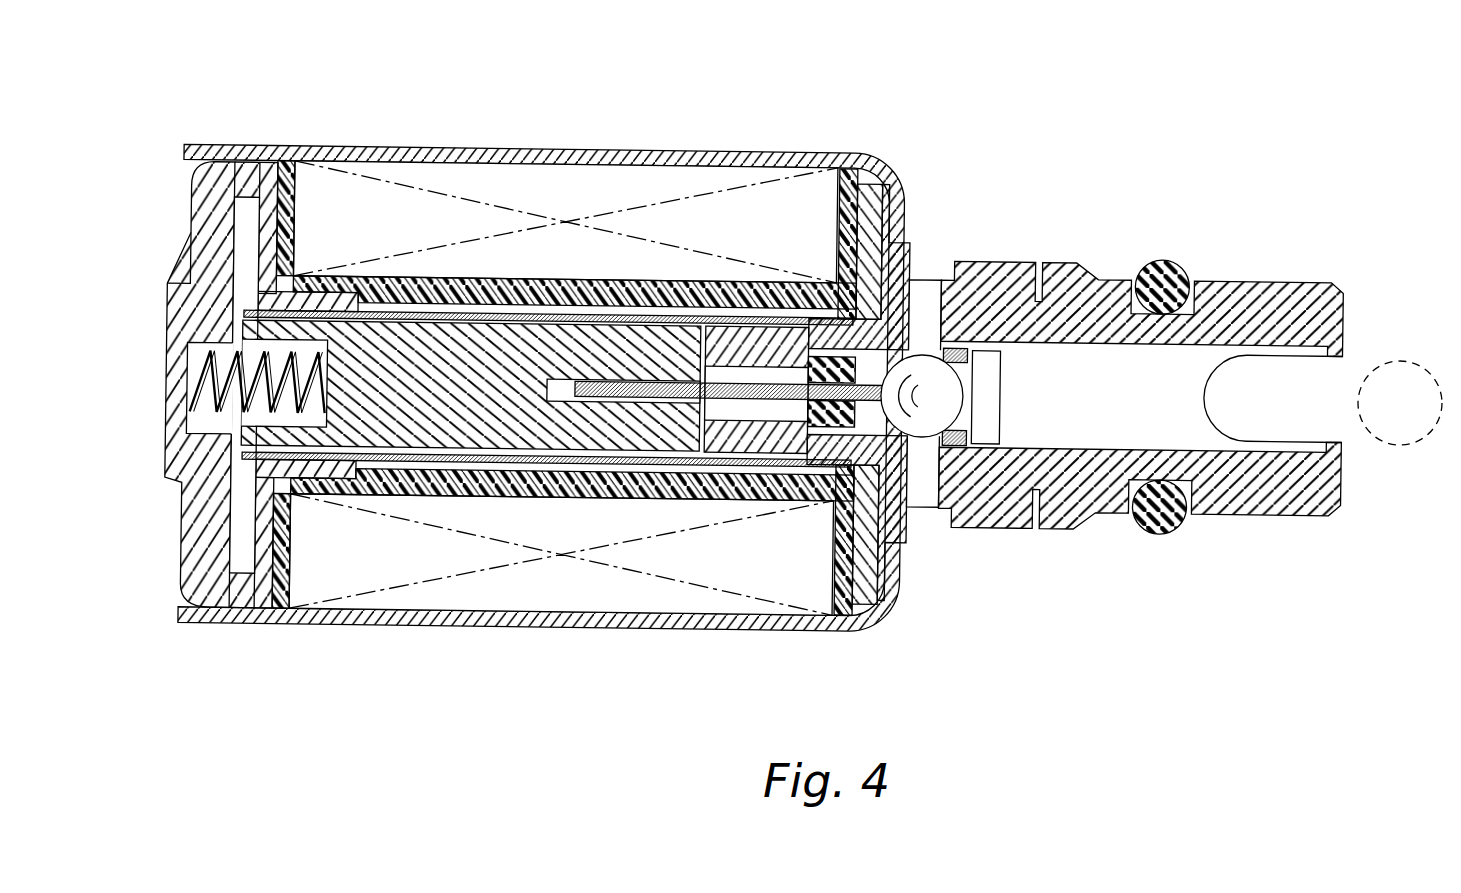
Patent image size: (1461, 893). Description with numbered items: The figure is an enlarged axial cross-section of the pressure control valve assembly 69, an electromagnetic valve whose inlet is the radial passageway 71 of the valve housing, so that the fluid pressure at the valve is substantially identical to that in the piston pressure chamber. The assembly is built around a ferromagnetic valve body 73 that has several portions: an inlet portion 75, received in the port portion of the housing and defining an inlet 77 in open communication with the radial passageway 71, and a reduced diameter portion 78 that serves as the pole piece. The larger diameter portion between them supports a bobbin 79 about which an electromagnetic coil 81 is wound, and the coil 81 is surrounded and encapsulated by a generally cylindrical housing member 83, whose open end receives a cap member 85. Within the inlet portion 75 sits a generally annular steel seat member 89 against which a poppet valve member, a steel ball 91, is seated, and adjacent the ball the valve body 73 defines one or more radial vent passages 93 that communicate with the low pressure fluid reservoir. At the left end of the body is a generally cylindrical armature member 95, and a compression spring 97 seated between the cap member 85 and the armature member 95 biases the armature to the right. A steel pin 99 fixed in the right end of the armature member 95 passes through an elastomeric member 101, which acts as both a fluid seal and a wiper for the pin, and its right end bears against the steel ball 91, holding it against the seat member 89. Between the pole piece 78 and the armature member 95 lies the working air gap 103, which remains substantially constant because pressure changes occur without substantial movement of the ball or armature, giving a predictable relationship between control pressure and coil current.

The pressure control valve assembly 69 is at (823, 118).
The radial passageway 71 is at (1398, 403).
The valve body 73 is at (907, 523).
The inlet portion 75 is at (1268, 282).
The inlet 77 is at (1150, 407).
The reduced diameter portion 78 is at (748, 442).
The bobbin 79 is at (513, 490).
The electromagnetic coil 81 is at (417, 550).
The housing member 83 is at (577, 626).
The cap member 85 is at (203, 488).
The seat member 89 is at (947, 448).
The steel ball 91 is at (932, 386).
The radial vent passages 93 is at (918, 300).
The armature member 95 is at (420, 380).
The compression spring 97 is at (212, 366).
The steel pin 99 is at (767, 385).
The elastomeric member 101 is at (820, 455).
The air gap 103 is at (700, 355).